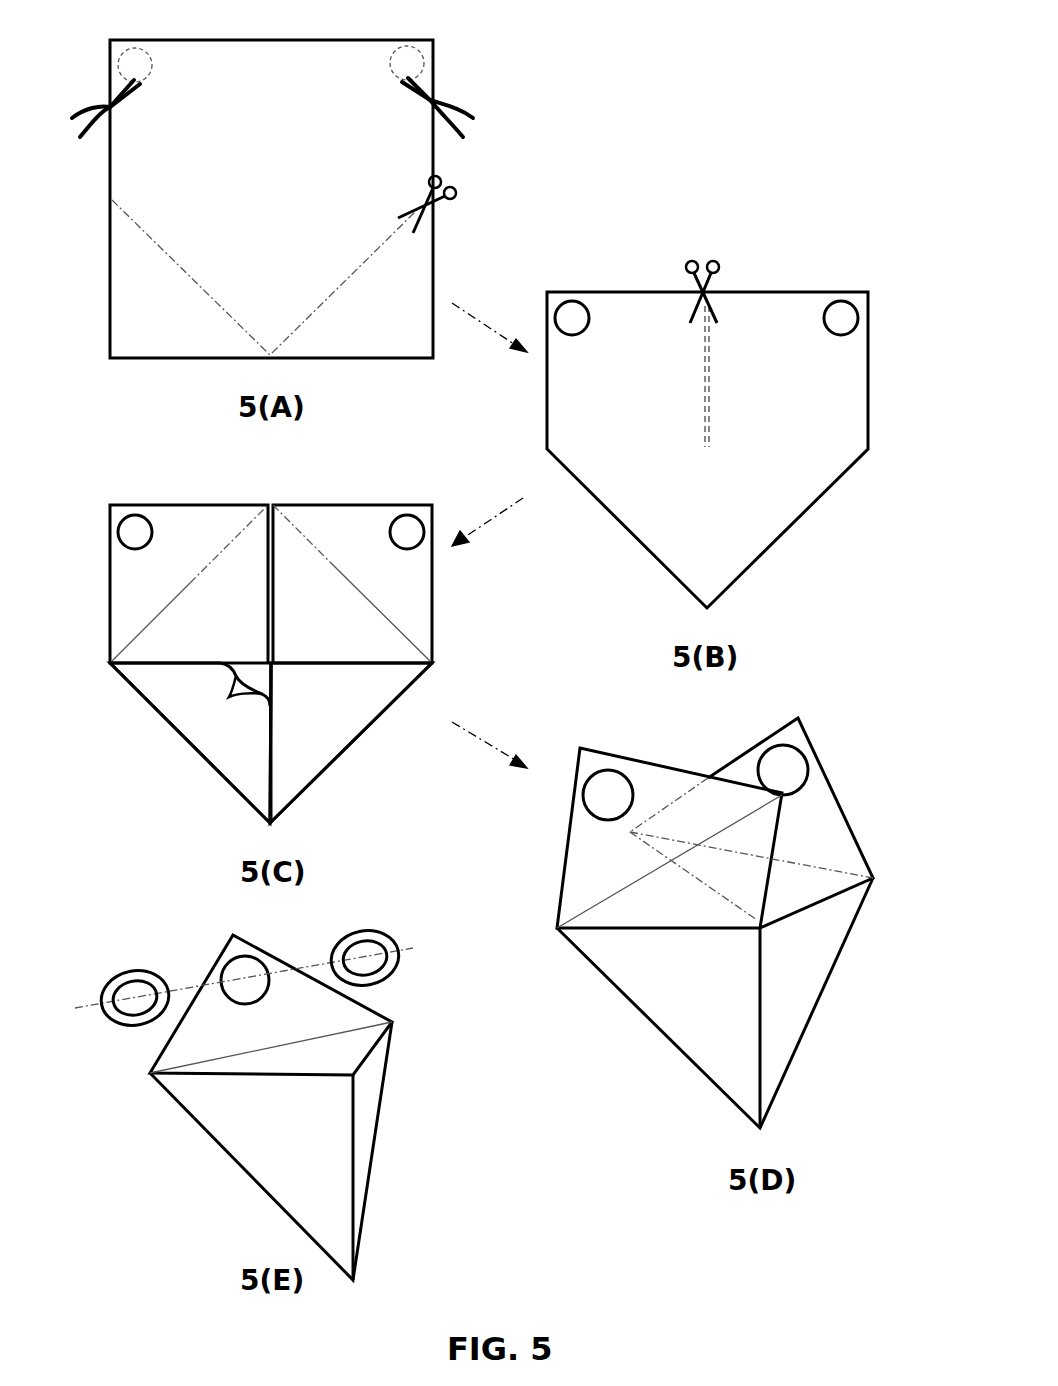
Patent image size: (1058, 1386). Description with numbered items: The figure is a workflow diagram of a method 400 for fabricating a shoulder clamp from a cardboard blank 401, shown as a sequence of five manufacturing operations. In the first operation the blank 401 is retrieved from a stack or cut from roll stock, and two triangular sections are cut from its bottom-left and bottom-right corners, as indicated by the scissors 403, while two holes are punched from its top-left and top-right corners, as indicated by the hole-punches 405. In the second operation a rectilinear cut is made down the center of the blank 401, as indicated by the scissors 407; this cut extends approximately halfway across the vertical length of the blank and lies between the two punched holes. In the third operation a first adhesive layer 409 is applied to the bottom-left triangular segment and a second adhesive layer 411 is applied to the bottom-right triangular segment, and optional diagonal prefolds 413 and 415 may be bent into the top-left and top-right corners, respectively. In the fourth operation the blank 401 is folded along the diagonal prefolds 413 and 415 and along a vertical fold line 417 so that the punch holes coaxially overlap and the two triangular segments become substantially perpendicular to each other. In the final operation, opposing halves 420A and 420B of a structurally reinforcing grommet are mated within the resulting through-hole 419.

The method 400 is at (771, 68).
The cardboard blank 401 is at (433, 153).
The scissors 403 is at (457, 192).
The hole-punches 405 is at (83, 100).
The scissors 407 is at (690, 260).
The first adhesive layer 409 is at (212, 738).
The second adhesive layer 411 is at (330, 740).
The diagonal prefold 413 is at (240, 533).
The diagonal prefold 415 is at (813, 863).
The vertical fold line 417 is at (762, 1043).
The through-hole 419 is at (260, 965).
The grommet half 420A is at (113, 973).
The grommet half 420B is at (382, 932).